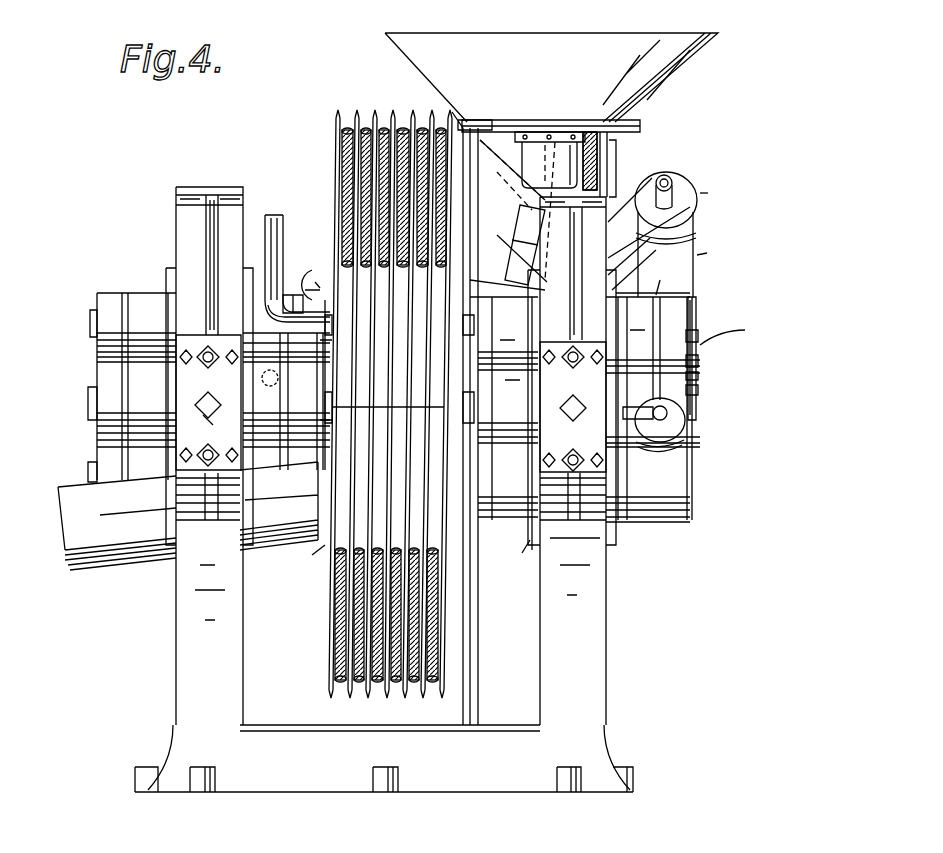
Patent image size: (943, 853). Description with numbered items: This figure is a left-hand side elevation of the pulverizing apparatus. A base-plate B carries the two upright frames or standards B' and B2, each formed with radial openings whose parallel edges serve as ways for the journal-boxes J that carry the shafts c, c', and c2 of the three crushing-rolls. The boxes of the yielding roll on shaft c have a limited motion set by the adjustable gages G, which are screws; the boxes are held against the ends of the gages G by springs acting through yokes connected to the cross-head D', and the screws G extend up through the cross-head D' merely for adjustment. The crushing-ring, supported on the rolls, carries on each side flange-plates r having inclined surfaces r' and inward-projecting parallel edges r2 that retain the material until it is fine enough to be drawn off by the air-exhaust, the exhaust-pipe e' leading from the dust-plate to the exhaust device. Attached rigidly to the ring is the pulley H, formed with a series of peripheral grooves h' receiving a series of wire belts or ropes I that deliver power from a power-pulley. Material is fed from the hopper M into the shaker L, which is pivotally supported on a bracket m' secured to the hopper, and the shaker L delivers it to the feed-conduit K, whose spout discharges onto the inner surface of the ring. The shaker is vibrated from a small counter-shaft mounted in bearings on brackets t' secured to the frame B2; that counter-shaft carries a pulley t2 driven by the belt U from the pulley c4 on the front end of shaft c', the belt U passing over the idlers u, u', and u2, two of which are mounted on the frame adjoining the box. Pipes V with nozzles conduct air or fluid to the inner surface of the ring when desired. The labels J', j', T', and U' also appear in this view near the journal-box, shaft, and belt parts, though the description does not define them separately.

The base-plate B is at (384, 758).
The frame or standard B' is at (572, 461).
The frame or standard B2 is at (190, 243).
The hopper M is at (551, 115).
The bracket m' is at (550, 160).
The shaker L is at (528, 190).
The feed-conduit K is at (520, 265).
The pulley H is at (336, 187).
The peripheral grooves h' is at (394, 180).
The belts I is at (345, 640).
The pipes V is at (297, 268).
The parallel edges r2 is at (302, 268).
The flange-plates r is at (403, 415).
The inclined surfaces r' is at (312, 559).
The shaft c is at (196, 386).
The shaft c' is at (79, 323).
The shaft c2 is at (88, 462).
The exhaust-pipe e' is at (188, 516).
The cross-head D' is at (391, 403).
The adjustable gages G is at (392, 428).
The journal-boxes J is at (403, 423).
The journal box J' is at (653, 407).
The journal j' is at (519, 556).
The idler u is at (705, 358).
The idler u' is at (709, 354).
The pulley c4 is at (732, 330).
The idler u2 is at (686, 422).
The pulley T' is at (666, 221).
The brackets t' is at (649, 234).
The pulley t2 is at (711, 193).
The belt U is at (706, 253).
The pulley bracket U' is at (665, 278).